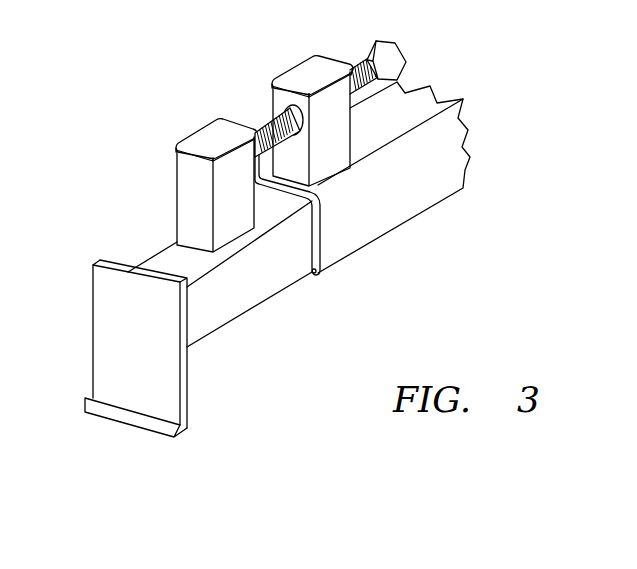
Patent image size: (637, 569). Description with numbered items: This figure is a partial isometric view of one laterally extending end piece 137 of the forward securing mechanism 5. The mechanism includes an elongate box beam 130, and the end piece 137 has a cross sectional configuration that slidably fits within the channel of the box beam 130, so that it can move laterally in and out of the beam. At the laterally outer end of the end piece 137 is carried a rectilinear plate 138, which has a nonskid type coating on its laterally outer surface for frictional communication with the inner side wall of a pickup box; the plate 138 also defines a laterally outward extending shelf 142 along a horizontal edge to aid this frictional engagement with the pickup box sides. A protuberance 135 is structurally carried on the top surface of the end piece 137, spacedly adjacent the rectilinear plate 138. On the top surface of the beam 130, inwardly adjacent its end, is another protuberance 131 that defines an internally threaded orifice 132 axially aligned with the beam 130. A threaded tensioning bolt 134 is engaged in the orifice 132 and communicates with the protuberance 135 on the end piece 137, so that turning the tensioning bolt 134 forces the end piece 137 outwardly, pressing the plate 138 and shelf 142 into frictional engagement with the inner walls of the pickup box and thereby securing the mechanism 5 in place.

The forward securing mechanism 5 is at (377, 243).
The elongate box beam 130 is at (413, 180).
The protuberance 131 is at (279, 97).
The internally threaded orifice 132 is at (286, 113).
The threaded tensioning bolt 134 is at (354, 64).
The protuberance 135 is at (188, 184).
The laterally extending end piece 137 is at (238, 300).
The rectilinear plate 138 is at (127, 345).
The laterally outward extending shelf 142 is at (135, 426).